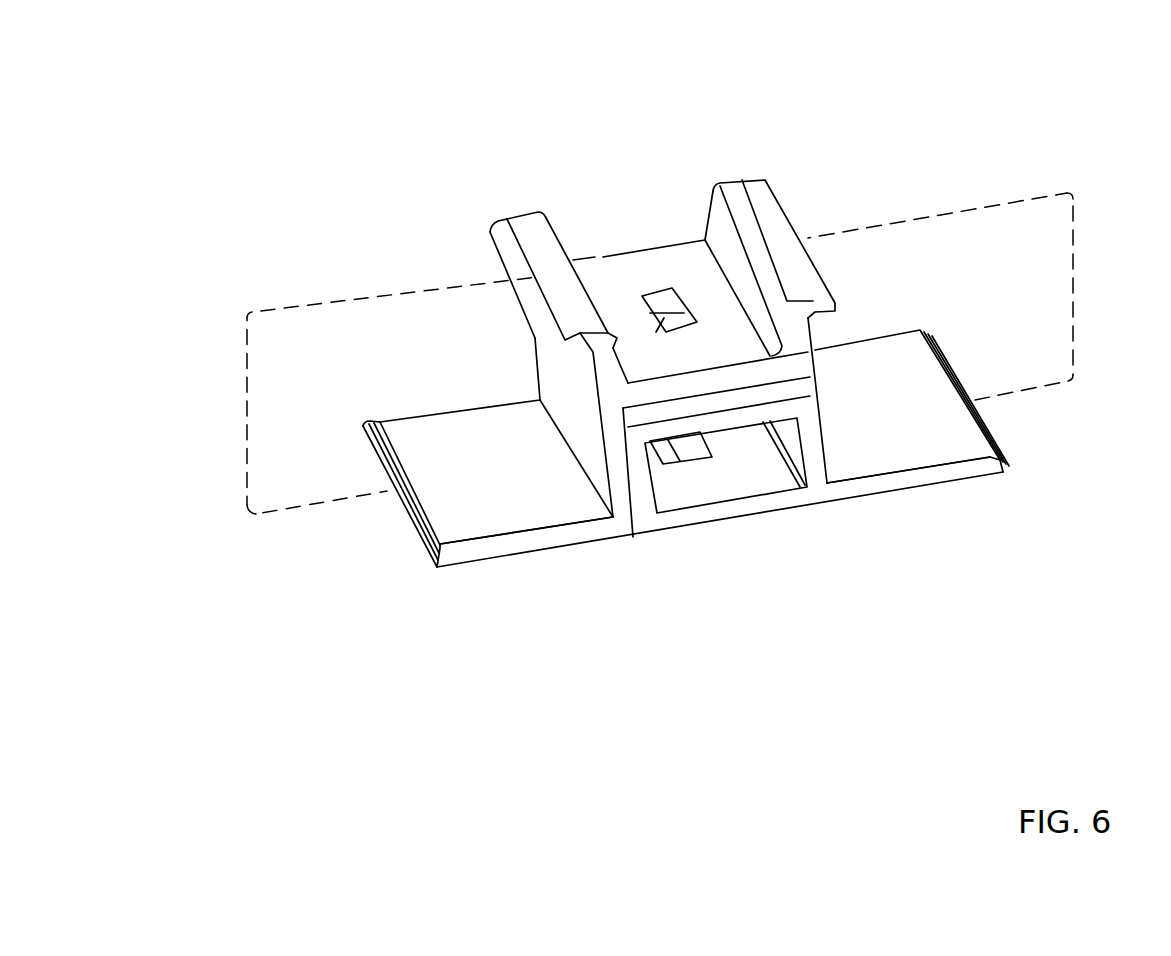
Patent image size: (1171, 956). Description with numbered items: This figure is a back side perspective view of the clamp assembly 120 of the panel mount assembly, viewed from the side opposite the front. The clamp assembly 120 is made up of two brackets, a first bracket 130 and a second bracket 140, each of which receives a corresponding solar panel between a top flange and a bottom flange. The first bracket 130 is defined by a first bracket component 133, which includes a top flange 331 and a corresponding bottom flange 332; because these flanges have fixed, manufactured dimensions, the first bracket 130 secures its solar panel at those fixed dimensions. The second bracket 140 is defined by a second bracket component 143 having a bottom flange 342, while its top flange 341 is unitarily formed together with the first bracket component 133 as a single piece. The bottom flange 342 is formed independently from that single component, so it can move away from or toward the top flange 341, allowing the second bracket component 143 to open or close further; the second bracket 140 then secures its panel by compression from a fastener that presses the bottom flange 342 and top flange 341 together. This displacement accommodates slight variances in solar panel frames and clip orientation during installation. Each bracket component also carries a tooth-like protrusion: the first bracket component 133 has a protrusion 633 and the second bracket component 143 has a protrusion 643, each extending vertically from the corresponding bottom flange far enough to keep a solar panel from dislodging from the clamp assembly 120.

The clamp assembly 120 is at (1055, 81).
The first bracket 130 is at (240, 397).
The second bracket 140 is at (1078, 286).
The top flange 331 is at (575, 348).
The top flange 341 is at (816, 312).
The first bracket component 133 is at (543, 515).
The second bracket component 143 is at (862, 460).
The protrusion 633 is at (442, 534).
The protrusion 643 is at (968, 420).
The bottom flange 332 is at (497, 520).
The bottom flange 342 is at (889, 452).